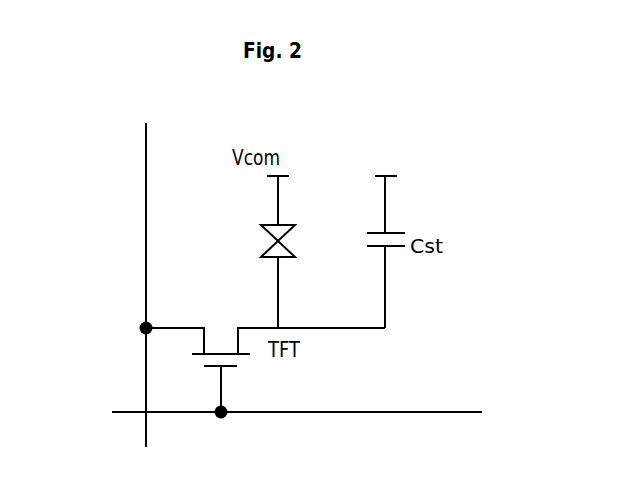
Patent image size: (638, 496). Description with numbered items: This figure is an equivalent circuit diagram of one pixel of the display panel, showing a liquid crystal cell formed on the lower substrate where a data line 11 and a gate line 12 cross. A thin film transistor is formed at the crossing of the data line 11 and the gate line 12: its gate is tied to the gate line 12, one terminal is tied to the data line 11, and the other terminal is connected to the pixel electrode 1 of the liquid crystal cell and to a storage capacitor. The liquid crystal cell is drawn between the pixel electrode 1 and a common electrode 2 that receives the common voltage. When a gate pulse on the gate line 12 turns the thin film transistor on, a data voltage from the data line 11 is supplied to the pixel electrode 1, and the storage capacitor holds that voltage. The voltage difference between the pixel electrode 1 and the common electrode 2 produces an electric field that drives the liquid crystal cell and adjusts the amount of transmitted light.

The pixel electrode 1 is at (274, 259).
The common electrode 2 is at (275, 223).
The data line 11 is at (146, 185).
The gate line 12 is at (392, 413).